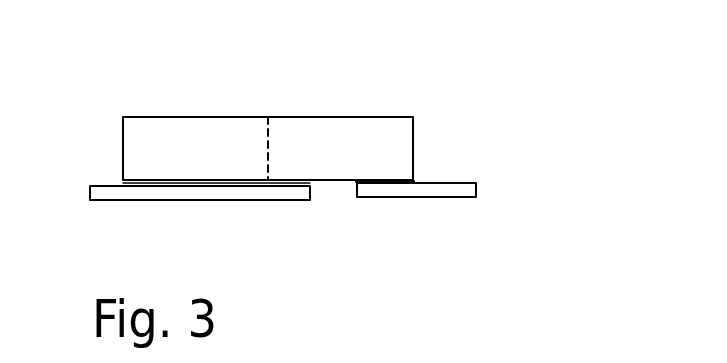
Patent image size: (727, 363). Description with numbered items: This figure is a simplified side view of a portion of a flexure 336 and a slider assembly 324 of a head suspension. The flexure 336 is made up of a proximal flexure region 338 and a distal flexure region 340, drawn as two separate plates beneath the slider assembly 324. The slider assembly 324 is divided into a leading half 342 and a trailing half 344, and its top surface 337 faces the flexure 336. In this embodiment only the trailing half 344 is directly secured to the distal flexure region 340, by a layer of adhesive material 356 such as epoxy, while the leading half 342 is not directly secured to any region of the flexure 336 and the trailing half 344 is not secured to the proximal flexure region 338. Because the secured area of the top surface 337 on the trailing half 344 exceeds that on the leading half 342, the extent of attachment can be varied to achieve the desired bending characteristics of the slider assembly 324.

The slider assembly 324 is at (468, 90).
The leading half 342 is at (200, 106).
The trailing half 344 is at (361, 106).
The adhesive material 356 is at (413, 180).
The top surface 337 is at (208, 182).
The flexure 336 is at (507, 209).
The proximal flexure region 338 is at (273, 187).
The distal flexure region 340 is at (375, 193).